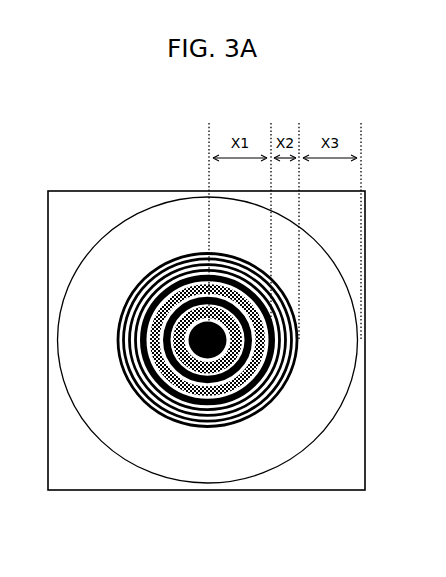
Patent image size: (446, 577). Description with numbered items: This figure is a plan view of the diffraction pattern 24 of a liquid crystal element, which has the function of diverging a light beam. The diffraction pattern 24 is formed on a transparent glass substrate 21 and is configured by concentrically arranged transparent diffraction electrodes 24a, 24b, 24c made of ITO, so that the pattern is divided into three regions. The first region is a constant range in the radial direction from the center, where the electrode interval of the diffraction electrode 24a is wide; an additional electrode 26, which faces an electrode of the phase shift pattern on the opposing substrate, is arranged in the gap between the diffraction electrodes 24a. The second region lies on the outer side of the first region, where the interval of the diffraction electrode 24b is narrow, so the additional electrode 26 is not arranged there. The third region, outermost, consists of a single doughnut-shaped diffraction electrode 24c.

The transparent substrate 21 is at (118, 190).
The diffraction pattern 24 is at (84, 241).
The diffraction electrode 24a is at (228, 333).
The diffraction electrode 24b is at (282, 300).
The diffraction electrode 24c is at (313, 408).
The additional electrode 26 is at (180, 380).